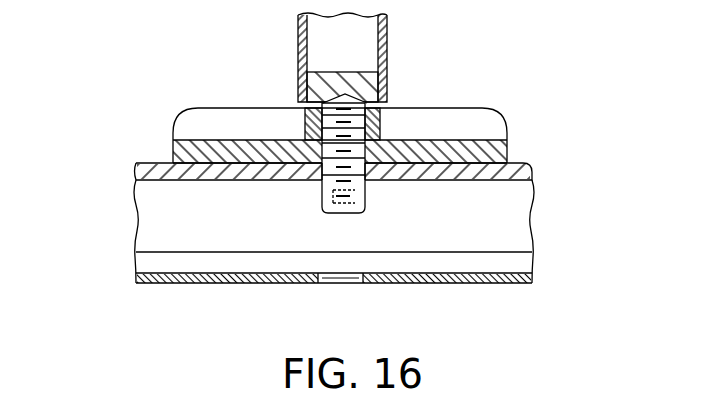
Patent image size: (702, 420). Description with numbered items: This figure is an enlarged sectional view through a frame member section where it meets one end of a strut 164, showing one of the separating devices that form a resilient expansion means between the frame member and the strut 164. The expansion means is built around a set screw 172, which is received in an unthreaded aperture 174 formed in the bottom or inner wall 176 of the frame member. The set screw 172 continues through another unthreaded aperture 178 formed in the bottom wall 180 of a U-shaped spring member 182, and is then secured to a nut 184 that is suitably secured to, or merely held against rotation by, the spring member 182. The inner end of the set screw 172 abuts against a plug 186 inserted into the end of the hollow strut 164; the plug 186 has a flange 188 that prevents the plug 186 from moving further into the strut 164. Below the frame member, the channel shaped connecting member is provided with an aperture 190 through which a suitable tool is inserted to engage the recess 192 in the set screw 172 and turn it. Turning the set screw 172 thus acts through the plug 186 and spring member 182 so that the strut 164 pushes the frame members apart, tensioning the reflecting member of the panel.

The strut 164 is at (388, 43).
The plug 186 is at (322, 72).
The flange 188 is at (298, 100).
The bottom wall 180 is at (483, 140).
The unthreaded aperture 178 is at (370, 150).
The nut 184 is at (303, 121).
The inner wall 176 is at (184, 181).
The unthreaded aperture 174 is at (297, 181).
The set screw 172 is at (366, 191).
The recess 192 is at (342, 216).
The spring member 182 is at (156, 132).
The aperture 190 is at (345, 287).